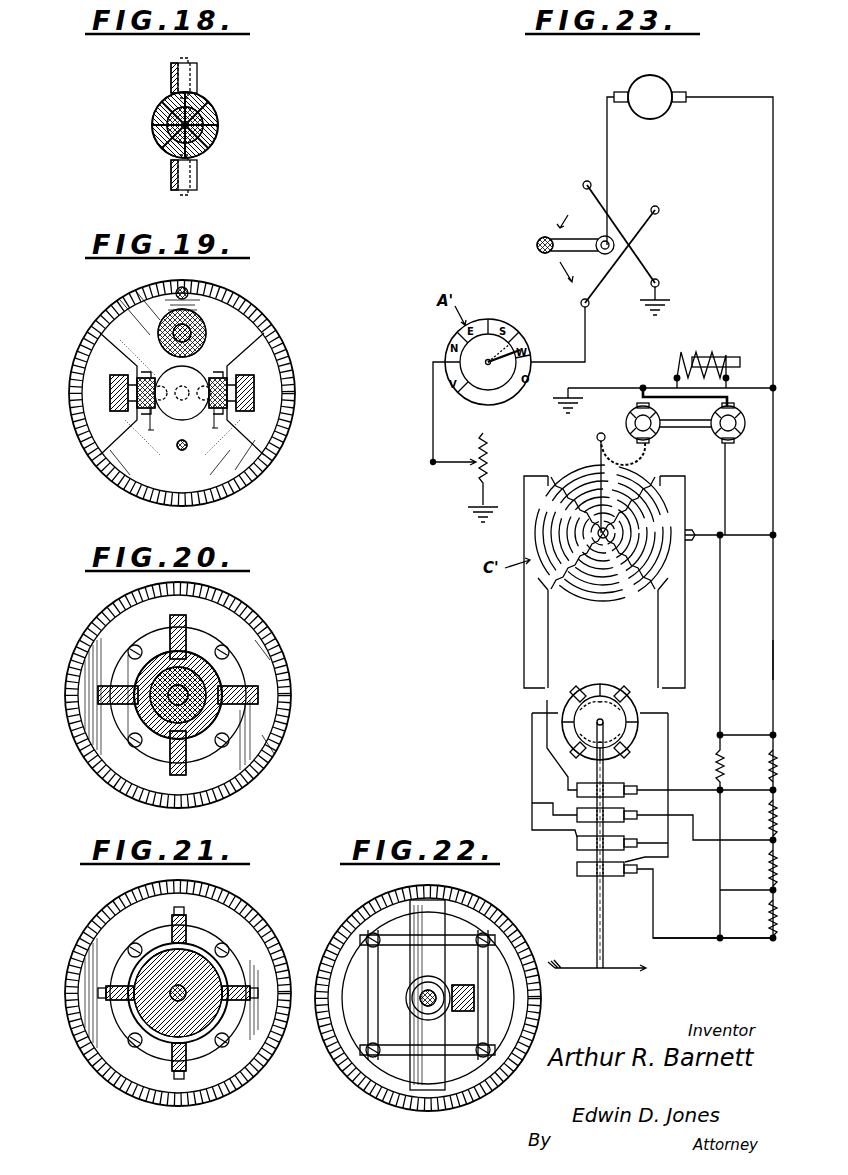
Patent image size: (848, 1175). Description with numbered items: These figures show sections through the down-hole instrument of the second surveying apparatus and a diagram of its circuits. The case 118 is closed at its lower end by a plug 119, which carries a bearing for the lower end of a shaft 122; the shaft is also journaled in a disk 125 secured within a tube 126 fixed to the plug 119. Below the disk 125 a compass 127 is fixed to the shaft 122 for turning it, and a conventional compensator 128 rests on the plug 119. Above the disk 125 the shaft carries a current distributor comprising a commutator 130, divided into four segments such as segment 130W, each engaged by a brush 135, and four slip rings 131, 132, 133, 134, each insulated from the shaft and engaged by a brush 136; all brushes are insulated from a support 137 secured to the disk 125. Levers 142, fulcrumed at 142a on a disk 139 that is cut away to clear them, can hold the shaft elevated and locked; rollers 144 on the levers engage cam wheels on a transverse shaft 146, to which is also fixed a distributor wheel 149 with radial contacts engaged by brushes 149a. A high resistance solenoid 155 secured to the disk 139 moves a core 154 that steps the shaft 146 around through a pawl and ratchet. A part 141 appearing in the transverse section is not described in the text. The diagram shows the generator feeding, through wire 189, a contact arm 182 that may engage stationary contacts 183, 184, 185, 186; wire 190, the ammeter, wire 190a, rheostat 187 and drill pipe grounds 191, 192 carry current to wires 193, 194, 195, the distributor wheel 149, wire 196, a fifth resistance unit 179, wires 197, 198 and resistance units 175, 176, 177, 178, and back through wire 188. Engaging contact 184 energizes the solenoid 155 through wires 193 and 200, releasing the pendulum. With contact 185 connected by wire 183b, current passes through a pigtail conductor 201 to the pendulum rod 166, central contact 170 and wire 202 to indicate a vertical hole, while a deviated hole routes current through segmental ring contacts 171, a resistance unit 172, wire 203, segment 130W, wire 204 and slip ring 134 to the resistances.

In FIG. 19, the case 118 is at (82, 340).
In FIG. 20, the case 118 is at (90, 632).
In FIG. 21, the case 118 is at (82, 902).
In FIG. 22, the case 118 is at (375, 900).
In FIG. 22, the plug 119 is at (355, 1025).
In FIG. 20, the shaft 122 is at (192, 712).
In FIG. 21, the shaft 122 is at (170, 1000).
In FIG. 22, the shaft 122 is at (445, 1003).
In FIG. 23, the shaft 122 is at (597, 940).
In FIG. 20, the disk 125 is at (245, 750).
In FIG. 21, the disk 125 is at (98, 952).
In FIG. 19, the tube 126 is at (84, 370).
In FIG. 20, the tube 126 is at (88, 652).
In FIG. 21, the tube 126 is at (90, 926).
In FIG. 22, the tube 126 is at (475, 910).
In FIG. 22, the compass 127 is at (420, 1090).
In FIG. 23, the compass 127 is at (628, 972).
In FIG. 22, the compensator 128 is at (370, 1030).
In FIG. 20, the commutator 130 is at (150, 708).
In FIG. 23, the commutator 130 is at (626, 421).
In FIG. 23, the segment of commutator 130W is at (613, 688).
In FIG. 21, the slip ring 131 is at (150, 1030).
In FIG. 23, the slip ring 131 is at (577, 790).
In FIG. 23, the slip ring 132 is at (577, 815).
In FIG. 23, the slip ring 133 is at (577, 843).
In FIG. 23, the slip ring 134 is at (577, 869).
In FIG. 20, the brush 135 is at (98, 695).
In FIG. 23, the brush 135 is at (574, 695).
In FIG. 19, the brush 136 is at (184, 450).
In FIG. 21, the brush 136 is at (186, 915).
In FIG. 23, the brush 136 is at (636, 786).
In FIG. 20, the support 137 is at (246, 688).
In FIG. 21, the support 137 is at (112, 1010).
In FIG. 19, the disk 139 is at (130, 325).
In FIG. 19, the hub 141 is at (192, 410).
In FIG. 19, the lever 142 is at (137, 402).
In FIG. 19, the fulcrum 142a is at (150, 425).
In FIG. 19, the roller 144 is at (110, 393).
In FIG. 18, the transverse shaft 146 is at (166, 127).
In FIG. 23, the transverse shaft 146 is at (686, 424).
In FIG. 18, the distributor wheel 149 is at (160, 105).
In FIG. 23, the distributor wheel 149 is at (727, 455).
In FIG. 18, the brushes 149a is at (178, 62).
In FIG. 19, the core 154 is at (200, 330).
In FIG. 23, the core 154 is at (738, 360).
In FIG. 19, the high resistance solenoid 155 is at (148, 300).
In FIG. 20, the high resistance solenoid 155 is at (170, 775).
In FIG. 23, the high resistance solenoid 155 is at (706, 357).
In FIG. 23, the pendulum rod 166 is at (598, 441).
In FIG. 23, the central contact 170 is at (600, 598).
In FIG. 23, the ring contacts 171 is at (548, 546).
In FIG. 23, the resistance unit 172 is at (560, 482).
In FIG. 23, the resistance unit 175 is at (760, 928).
In FIG. 23, the resistance unit 176 is at (760, 878).
In FIG. 23, the resistance unit 177 is at (760, 828).
In FIG. 23, the resistance unit 178 is at (758, 758).
In FIG. 23, the fifth resistance unit 179 is at (718, 756).
In FIG. 23, the contact arm 182 is at (538, 240).
In FIG. 23, the stationary contact 183 is at (581, 303).
In FIG. 23, the wire 183b is at (650, 237).
In FIG. 23, the drill pipe ground contact 184 is at (659, 283).
In FIG. 23, the stationary contact 185 is at (659, 209).
In FIG. 23, the stationary contact 186 is at (584, 183).
In FIG. 23, the rheostat 187 is at (475, 475).
In FIG. 23, the wire 188 is at (773, 660).
In FIG. 23, the wire 189 is at (607, 143).
In FIG. 23, the wire 190 is at (585, 335).
In FIG. 23, the wire 190a is at (433, 416).
In FIG. 23, the drill pipe ground 191 is at (470, 513).
In FIG. 23, the drill pipe ground 192 is at (566, 403).
In FIG. 23, the wire 193 is at (598, 388).
In FIG. 23, the wire 194 is at (640, 397).
In FIG. 23, the wire 195 is at (690, 382).
In FIG. 23, the wire 196 is at (722, 632).
In FIG. 23, the wire 197 is at (718, 885).
In FIG. 23, the wire 198 is at (736, 940).
In FIG. 23, the wire 200 is at (733, 386).
In FIG. 23, the pigtail conductor 201 is at (632, 452).
In FIG. 23, the wire 202 is at (745, 529).
In FIG. 23, the wire 203 is at (690, 548).
In FIG. 23, the wire 204 is at (670, 740).